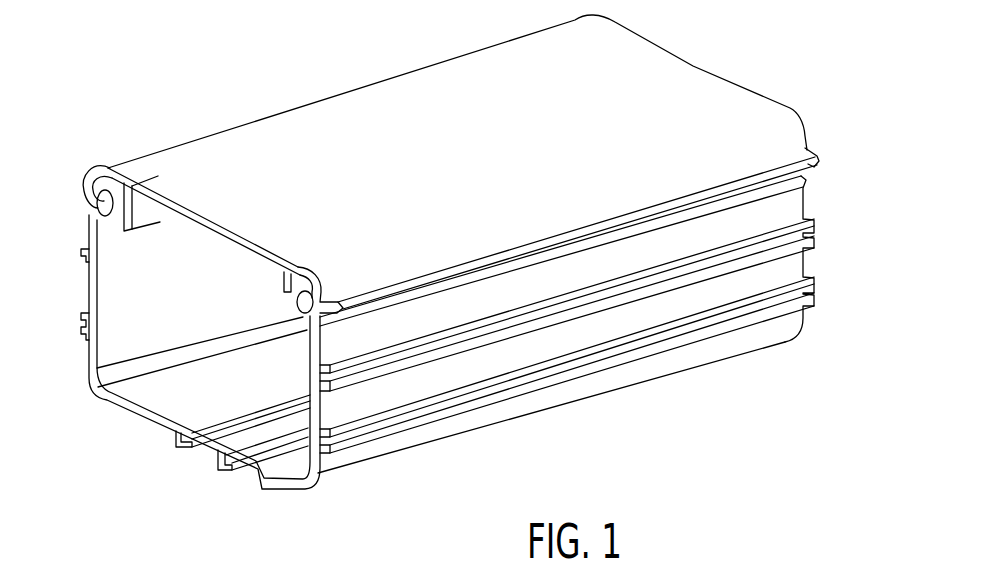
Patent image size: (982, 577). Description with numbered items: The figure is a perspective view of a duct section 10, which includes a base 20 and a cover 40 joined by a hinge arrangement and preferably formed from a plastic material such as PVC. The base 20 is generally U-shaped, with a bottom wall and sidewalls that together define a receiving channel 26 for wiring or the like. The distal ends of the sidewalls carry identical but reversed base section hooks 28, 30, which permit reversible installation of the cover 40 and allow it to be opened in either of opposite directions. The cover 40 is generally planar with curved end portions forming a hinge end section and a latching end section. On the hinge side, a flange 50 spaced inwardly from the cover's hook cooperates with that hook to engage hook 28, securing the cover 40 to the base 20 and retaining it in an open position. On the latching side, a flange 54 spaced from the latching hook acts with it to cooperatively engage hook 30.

The duct section 10 is at (198, 100).
The base 20 is at (140, 325).
The receiving channel 26 is at (250, 387).
The base section hook 28 is at (99, 231).
The base section hook 30 is at (297, 327).
The cover 40 is at (290, 130).
The flange 50 is at (146, 236).
The flange 54 is at (270, 287).